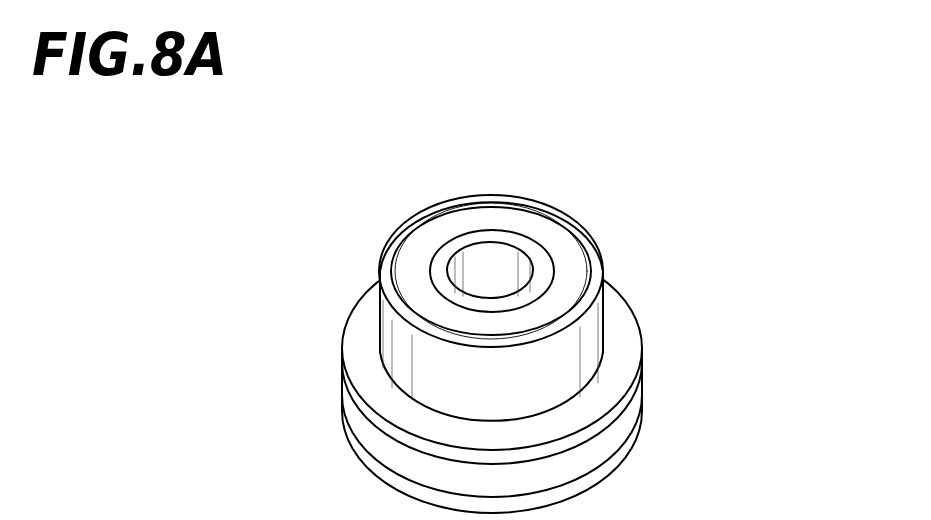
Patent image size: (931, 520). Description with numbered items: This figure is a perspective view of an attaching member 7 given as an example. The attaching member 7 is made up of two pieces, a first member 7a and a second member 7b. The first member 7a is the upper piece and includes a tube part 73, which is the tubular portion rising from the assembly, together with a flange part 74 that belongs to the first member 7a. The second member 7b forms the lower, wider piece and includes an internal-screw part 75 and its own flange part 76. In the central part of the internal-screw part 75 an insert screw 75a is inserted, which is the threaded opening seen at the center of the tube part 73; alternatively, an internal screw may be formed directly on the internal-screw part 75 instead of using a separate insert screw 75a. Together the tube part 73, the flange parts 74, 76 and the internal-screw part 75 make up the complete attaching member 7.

The attaching member 7 is at (539, 337).
The first member 7a is at (571, 305).
The second member 7b is at (557, 383).
The tube part 73 is at (593, 237).
The flange part 74 is at (627, 308).
The internal-screw part 75 is at (574, 305).
The insert screw 75a is at (487, 255).
The flange part 76 is at (552, 466).